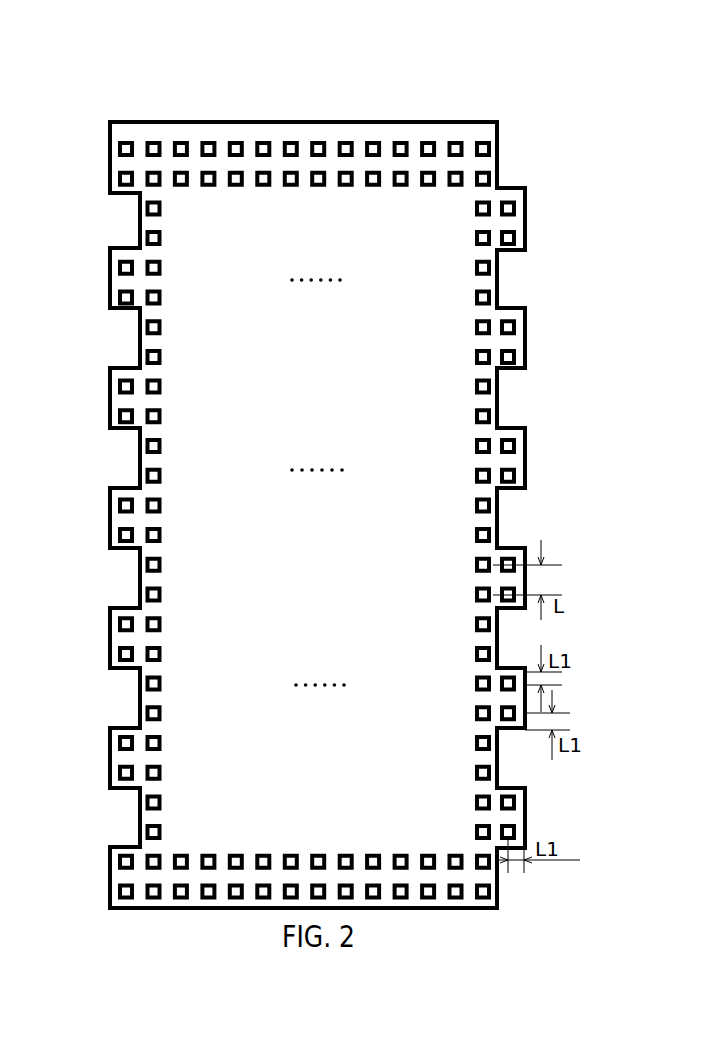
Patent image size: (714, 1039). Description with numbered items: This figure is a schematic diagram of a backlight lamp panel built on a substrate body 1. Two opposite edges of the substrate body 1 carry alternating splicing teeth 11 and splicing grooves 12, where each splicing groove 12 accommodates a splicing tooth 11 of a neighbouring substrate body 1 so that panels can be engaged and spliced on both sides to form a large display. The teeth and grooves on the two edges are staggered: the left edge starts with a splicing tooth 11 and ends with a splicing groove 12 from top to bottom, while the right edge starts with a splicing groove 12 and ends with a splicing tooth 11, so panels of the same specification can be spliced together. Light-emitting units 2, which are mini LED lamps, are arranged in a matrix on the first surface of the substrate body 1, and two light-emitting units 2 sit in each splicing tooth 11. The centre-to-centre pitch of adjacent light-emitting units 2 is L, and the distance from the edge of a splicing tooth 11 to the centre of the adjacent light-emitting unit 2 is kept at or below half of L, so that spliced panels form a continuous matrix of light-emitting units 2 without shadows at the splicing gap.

The substrate body 1 is at (209, 240).
The light-emitting unit 2 is at (348, 137).
The splicing tooth 11 is at (122, 368).
The splicing groove 12 is at (120, 463).